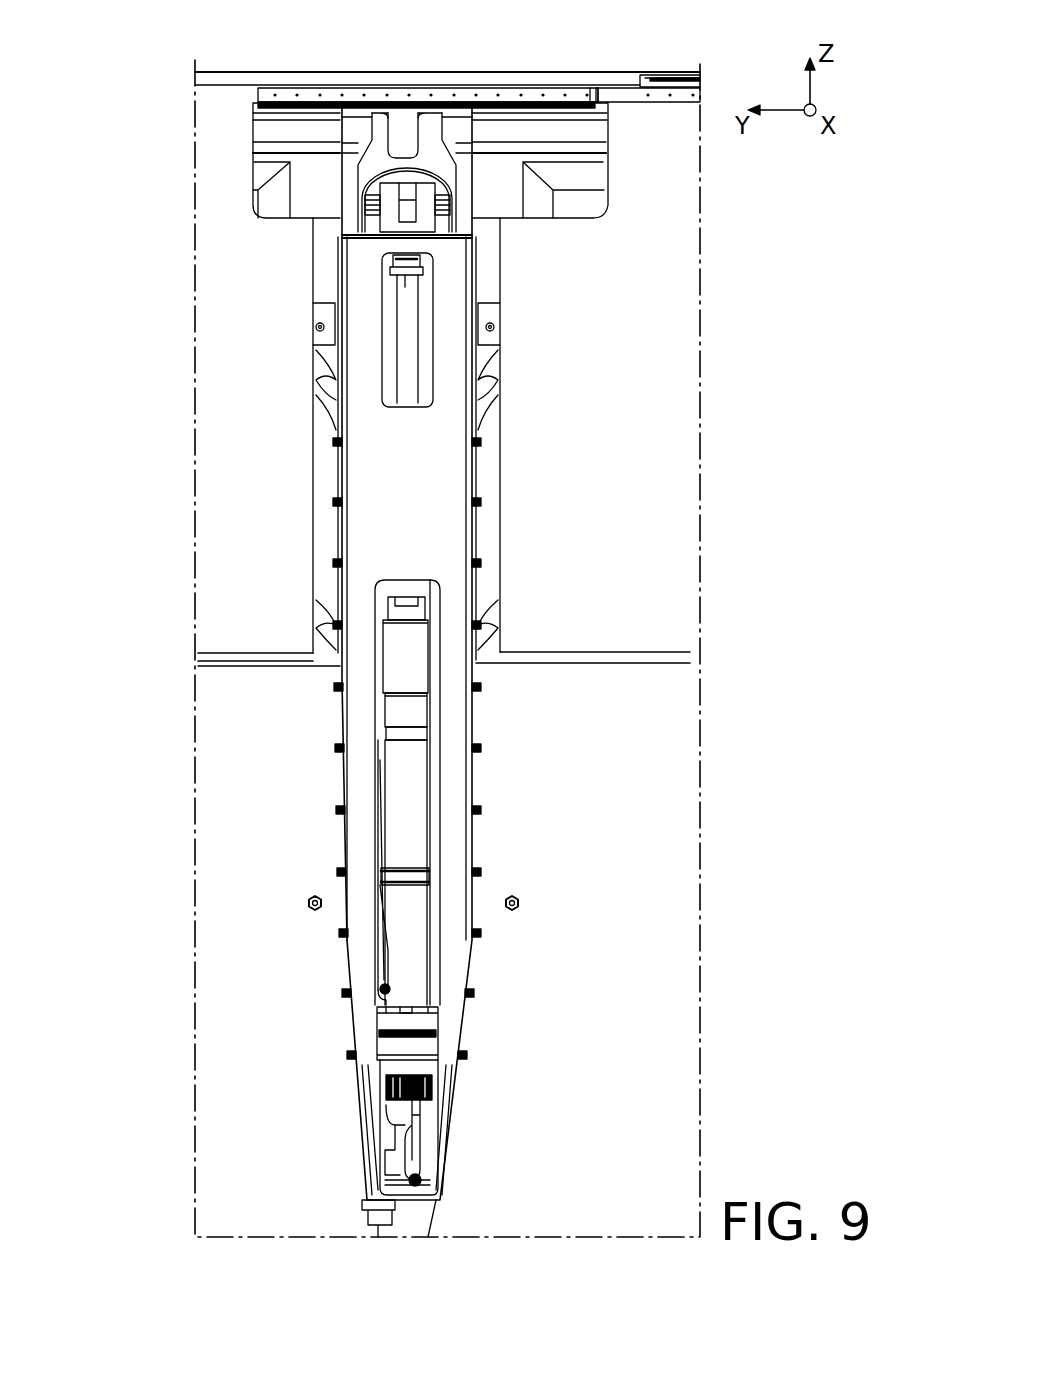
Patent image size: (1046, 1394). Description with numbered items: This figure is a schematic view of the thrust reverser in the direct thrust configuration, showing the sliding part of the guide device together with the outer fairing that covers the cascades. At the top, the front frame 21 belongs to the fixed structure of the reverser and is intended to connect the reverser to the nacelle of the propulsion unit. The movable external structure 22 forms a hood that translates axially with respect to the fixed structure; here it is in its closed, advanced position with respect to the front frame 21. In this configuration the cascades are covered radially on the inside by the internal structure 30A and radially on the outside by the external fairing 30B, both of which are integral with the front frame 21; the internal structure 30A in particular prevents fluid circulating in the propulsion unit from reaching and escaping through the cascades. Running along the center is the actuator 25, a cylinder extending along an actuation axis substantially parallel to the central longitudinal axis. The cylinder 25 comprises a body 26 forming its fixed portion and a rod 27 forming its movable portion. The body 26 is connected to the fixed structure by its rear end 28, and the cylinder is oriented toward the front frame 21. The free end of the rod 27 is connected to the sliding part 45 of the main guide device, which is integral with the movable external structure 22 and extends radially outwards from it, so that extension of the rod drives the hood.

The front frame 21 is at (550, 77).
The movable external structure 22 is at (640, 722).
The actuator 25 is at (98, 546).
The body 26 is at (400, 817).
The rod 27 is at (397, 393).
The rear end 28 is at (420, 1046).
The internal structure 30A is at (283, 206).
The external fairing 30B is at (637, 170).
The sliding part 45 is at (430, 500).